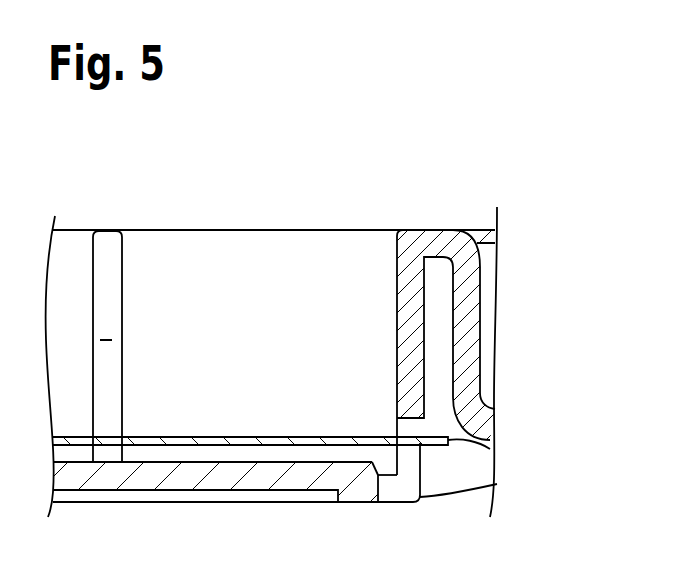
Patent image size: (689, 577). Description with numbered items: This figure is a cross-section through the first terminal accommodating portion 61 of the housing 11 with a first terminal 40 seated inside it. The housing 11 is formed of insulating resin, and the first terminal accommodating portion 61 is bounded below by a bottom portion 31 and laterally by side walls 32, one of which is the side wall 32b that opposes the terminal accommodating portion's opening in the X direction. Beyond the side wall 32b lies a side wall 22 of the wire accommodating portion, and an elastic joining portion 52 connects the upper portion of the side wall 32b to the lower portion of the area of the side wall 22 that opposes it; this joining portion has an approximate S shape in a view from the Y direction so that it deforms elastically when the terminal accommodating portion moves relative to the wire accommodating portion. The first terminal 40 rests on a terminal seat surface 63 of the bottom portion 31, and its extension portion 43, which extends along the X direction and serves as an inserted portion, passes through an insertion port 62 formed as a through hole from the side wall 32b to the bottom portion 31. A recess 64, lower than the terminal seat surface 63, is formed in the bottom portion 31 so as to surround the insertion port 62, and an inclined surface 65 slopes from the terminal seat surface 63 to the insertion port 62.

The housing 11 is at (70, 232).
The first terminal accommodating portion 61 is at (155, 245).
The side walls 32 is at (285, 230).
The side wall 32b is at (410, 232).
The side walls 22 is at (473, 232).
The elastic joining portion 52 is at (475, 315).
The first terminal 40 is at (292, 437).
The bottom portion 31 is at (177, 460).
The terminal seat surface 63 is at (243, 461).
The inclined surface 65 is at (378, 473).
The recess 64 is at (388, 472).
The extension portion 43 is at (497, 450).
The insertion port 62 is at (418, 424).